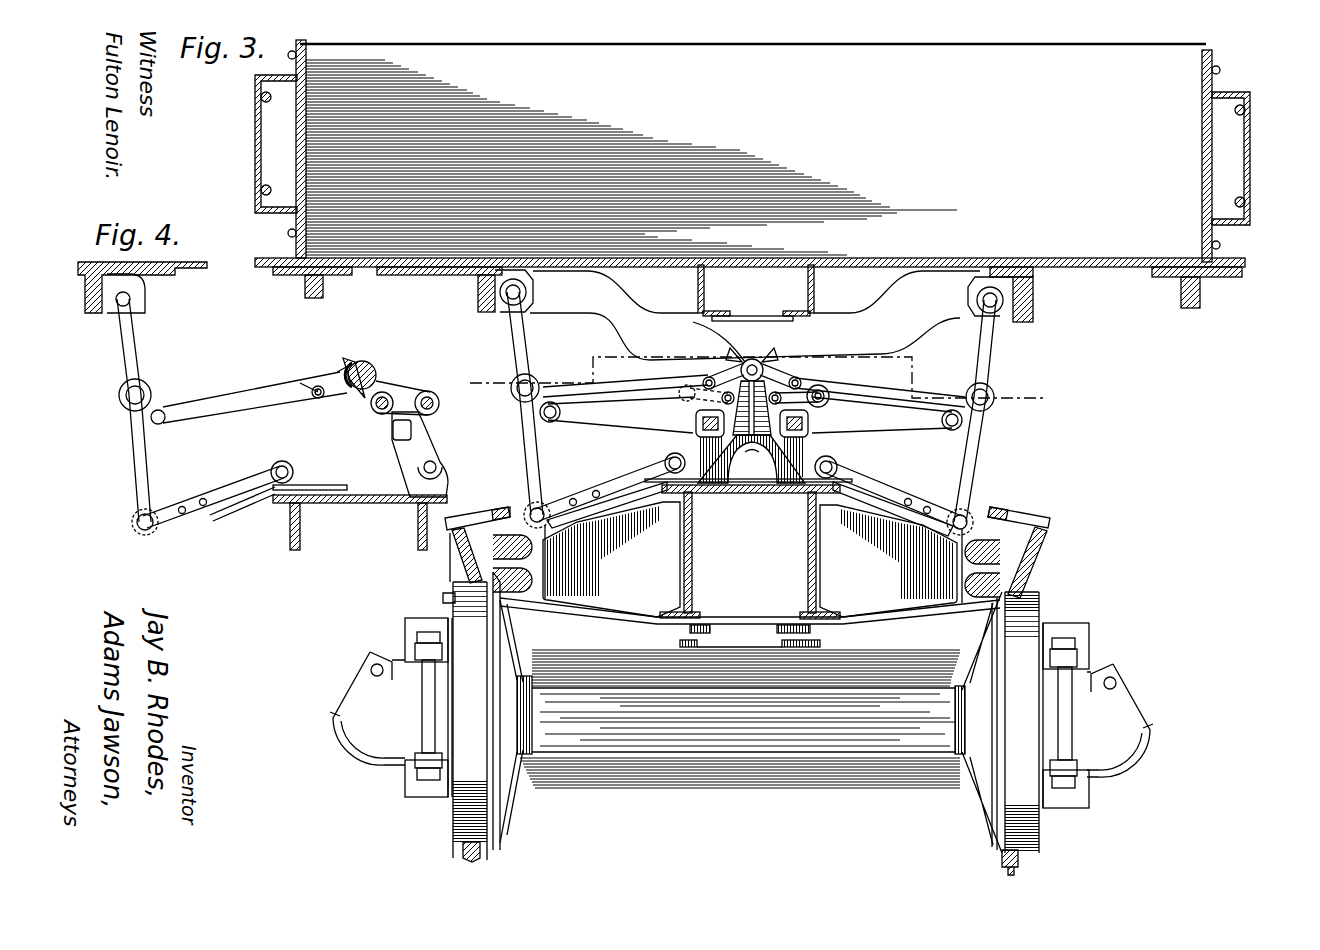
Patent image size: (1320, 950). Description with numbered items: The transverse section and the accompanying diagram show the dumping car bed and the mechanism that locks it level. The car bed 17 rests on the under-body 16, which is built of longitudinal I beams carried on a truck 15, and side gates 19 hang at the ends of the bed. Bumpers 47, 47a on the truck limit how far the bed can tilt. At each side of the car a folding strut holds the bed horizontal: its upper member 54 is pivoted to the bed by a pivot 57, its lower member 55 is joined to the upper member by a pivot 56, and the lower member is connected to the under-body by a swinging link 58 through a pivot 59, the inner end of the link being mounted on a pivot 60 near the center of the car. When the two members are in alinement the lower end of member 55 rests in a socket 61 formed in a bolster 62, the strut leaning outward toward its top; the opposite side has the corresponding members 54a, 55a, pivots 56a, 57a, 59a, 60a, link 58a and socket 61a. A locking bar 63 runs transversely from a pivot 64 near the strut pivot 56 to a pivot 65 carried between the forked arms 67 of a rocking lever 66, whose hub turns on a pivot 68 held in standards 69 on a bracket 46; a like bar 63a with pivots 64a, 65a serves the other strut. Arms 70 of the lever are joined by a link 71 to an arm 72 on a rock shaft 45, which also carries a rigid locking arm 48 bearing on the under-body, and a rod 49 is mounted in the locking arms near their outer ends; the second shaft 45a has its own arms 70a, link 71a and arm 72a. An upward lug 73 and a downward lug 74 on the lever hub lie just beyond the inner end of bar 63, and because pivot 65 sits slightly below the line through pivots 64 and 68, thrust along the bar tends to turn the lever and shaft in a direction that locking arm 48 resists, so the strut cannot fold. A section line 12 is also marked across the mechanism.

In FIG. 3, the section line 12 is at (476, 378).
In FIG. 3, the truck 15 is at (395, 639).
In FIG. 3, the under-body 16 is at (807, 605).
In FIG. 3, the car bed 17 is at (1100, 270).
In FIG. 3, the side gate 19 is at (296, 134).
In FIG. 3, the rock shaft 45 is at (810, 428).
In FIG. 4, the rock shaft 45 is at (412, 423).
In FIG. 3, the bearing block 45a is at (702, 419).
In FIG. 3, the bracket 46 is at (775, 483).
In FIG. 3, the bumper 47 is at (1028, 560).
In FIG. 3, the brake hanger 47a is at (466, 566).
In FIG. 4, the locking arm 48 is at (412, 448).
In FIG. 4, the rod 49 is at (427, 472).
In FIG. 3, the upper strut member 54 is at (508, 331).
In FIG. 4, the upper strut member 54 is at (140, 334).
In FIG. 3, the upper hanger link 54a is at (990, 343).
In FIG. 3, the lower strut member 55 is at (524, 458).
In FIG. 4, the lower strut member 55 is at (130, 457).
In FIG. 3, the lower hanger link 55a is at (978, 458).
In FIG. 3, the pivot 56 is at (531, 381).
In FIG. 4, the pivot 56 is at (142, 392).
In FIG. 3, the hanger pin 56a is at (991, 409).
In FIG. 3, the pivot 57 is at (522, 293).
In FIG. 4, the pivot 57 is at (131, 297).
In FIG. 3, the pivot pin 57a is at (985, 306).
In FIG. 3, the swinging link 58 is at (603, 497).
In FIG. 4, the swinging link 58 is at (218, 497).
In FIG. 3, the swinging link 58a is at (895, 492).
In FIG. 3, the pivot 59 is at (530, 509).
In FIG. 4, the pivot 59 is at (152, 526).
In FIG. 3, the lower pin 59a is at (969, 514).
In FIG. 3, the pivot 60 is at (665, 461).
In FIG. 4, the pivot 60 is at (275, 468).
In FIG. 3, the radius bar pin 60a is at (837, 465).
In FIG. 3, the socket 61 is at (545, 543).
In FIG. 3, the frame pocket 61a is at (962, 546).
In FIG. 3, the bolster 62 is at (616, 608).
In FIG. 3, the locking bar 63 is at (625, 410).
In FIG. 4, the locking bar 63 is at (202, 404).
In FIG. 3, the equalizer bar 63a is at (866, 412).
In FIG. 3, the pivot 64 is at (550, 422).
In FIG. 4, the pivot 64 is at (163, 422).
In FIG. 3, the equalizer pin 64a is at (950, 428).
In FIG. 3, the pivot 65 is at (703, 381).
In FIG. 4, the pivot 65 is at (316, 397).
In FIG. 3, the link bar 65a is at (803, 378).
In FIG. 4, the rocking lever 66 is at (370, 368).
In FIG. 3, the arms 67 is at (708, 377).
In FIG. 4, the arms 67 is at (336, 377).
In FIG. 3, the pivot 68 is at (752, 359).
In FIG. 4, the pivot 68 is at (376, 375).
In FIG. 3, the standards 69 is at (760, 442).
In FIG. 3, the arms 70 is at (770, 378).
In FIG. 4, the arms 70 is at (375, 400).
In FIG. 3, the connecting link 70a is at (730, 380).
In FIG. 3, the link 71 is at (812, 395).
In FIG. 4, the link 71 is at (410, 410).
In FIG. 3, the link pin 71a is at (737, 383).
In FIG. 3, the arm 72 is at (822, 405).
In FIG. 4, the arm 72 is at (434, 407).
In FIG. 3, the end pin 72a is at (687, 399).
In FIG. 3, the upwardly projecting lug 73 is at (701, 338).
In FIG. 4, the upwardly projecting lug 73 is at (348, 357).
In FIG. 4, the downwardly projecting lug 74 is at (322, 396).